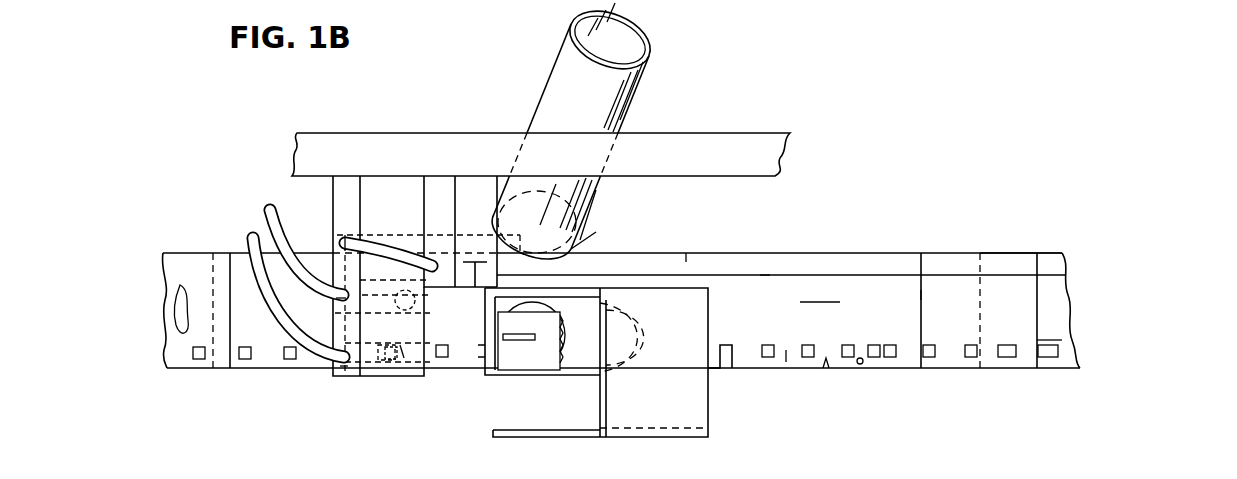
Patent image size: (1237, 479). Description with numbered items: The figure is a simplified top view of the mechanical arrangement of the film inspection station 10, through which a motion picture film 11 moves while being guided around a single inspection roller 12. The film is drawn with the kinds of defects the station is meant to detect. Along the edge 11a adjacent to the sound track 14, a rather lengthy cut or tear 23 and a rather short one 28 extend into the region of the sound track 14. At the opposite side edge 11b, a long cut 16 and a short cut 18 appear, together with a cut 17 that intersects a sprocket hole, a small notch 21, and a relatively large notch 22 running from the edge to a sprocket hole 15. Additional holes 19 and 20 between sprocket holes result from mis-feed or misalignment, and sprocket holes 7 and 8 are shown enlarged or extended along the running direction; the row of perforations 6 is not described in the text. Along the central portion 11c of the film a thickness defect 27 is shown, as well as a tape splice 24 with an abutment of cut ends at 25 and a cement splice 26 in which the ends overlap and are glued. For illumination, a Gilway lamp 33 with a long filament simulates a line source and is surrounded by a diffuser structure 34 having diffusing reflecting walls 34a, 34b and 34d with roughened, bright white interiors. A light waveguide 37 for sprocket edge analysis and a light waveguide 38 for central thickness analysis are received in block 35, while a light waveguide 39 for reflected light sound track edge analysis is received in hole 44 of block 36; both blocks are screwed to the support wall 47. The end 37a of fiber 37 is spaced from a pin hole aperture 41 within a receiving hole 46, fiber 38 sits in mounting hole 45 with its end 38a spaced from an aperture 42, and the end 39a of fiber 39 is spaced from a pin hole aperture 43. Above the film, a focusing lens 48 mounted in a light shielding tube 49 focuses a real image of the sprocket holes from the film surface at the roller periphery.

The perforations 6 is at (288, 345).
The enlarged sprocket hole 7 is at (1006, 360).
The extended sprocket hole 8 is at (1043, 354).
The film inspection station 10 is at (491, 121).
The motion picture film 11 is at (893, 248).
The film edge adjacent sound track 11a is at (1043, 257).
The opposite side edge 11b is at (1044, 368).
The central portion of the film 11c is at (840, 311).
The inspection roller 12 is at (363, 236).
The sound track 14 is at (1010, 257).
The sprocket hole 15 is at (728, 346).
The long cut 16 is at (786, 364).
The cut intersecting a sprocket hole 17 is at (809, 368).
The short cut 18 is at (827, 370).
The additional hole 19 is at (859, 366).
The additional hole 20 is at (873, 360).
The small notch 21 is at (912, 370).
The large notch 22 is at (722, 369).
The long cut or tear 23 is at (766, 273).
The tape splice 24 is at (920, 296).
The abutment of cut ends 25 is at (980, 254).
The cement splice 26 is at (221, 254).
The thickness defect 27 is at (181, 288).
The short cut or tear 28 is at (686, 262).
The Gilway lamp 33 is at (570, 356).
The diffuser structure 34 is at (608, 406).
The diffusing reflecting wall 34a is at (541, 430).
The diffusing reflecting wall 34b is at (672, 370).
The diffusing reflecting wall 34d is at (487, 378).
The block 35 is at (387, 385).
The block 36 is at (424, 222).
The light waveguide 37 is at (320, 358).
The end of fiber optic 37a is at (380, 358).
The light waveguide 38 is at (333, 284).
The end of optical fiber 38a is at (418, 292).
The light waveguide 39 is at (427, 262).
The end of fiber optic 39a is at (472, 260).
The pin hole aperture 41 is at (404, 360).
The aperture 42 is at (420, 307).
The pin hole aperture 43 is at (537, 222).
The hole 44 is at (430, 270).
The mounting hole 45 is at (343, 307).
The receiving hole 46 is at (334, 375).
The support wall 47 is at (707, 141).
The focusing lens 48 is at (590, 226).
The light shielding tube 49 is at (645, 102).